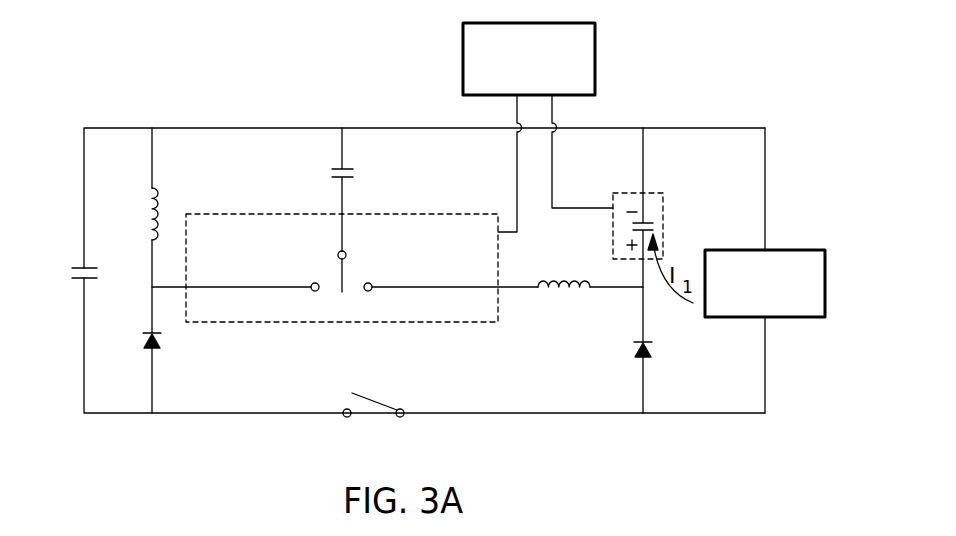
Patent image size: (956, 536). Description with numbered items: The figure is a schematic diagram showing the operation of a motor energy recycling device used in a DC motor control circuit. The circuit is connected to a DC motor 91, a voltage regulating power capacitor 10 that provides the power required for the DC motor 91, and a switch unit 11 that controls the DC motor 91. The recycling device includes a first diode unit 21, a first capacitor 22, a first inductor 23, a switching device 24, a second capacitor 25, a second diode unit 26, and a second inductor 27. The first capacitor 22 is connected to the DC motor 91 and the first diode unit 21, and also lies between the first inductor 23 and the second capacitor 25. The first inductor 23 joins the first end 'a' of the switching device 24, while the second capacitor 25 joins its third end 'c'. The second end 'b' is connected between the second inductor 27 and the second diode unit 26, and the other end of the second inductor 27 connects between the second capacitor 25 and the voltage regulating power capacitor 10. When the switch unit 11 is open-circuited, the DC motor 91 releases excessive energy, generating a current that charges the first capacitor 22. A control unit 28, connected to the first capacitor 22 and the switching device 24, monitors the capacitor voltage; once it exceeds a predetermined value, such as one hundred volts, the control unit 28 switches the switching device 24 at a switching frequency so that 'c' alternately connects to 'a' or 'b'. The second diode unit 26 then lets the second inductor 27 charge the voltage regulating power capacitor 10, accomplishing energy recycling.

The voltage regulating power capacitor 10 is at (72, 274).
The switch unit 11 is at (375, 398).
The first diode unit 21 is at (634, 345).
The first capacitor 22 is at (613, 228).
The first inductor 23 is at (545, 278).
The switching device 24 is at (442, 214).
The second capacitor 25 is at (331, 173).
The second diode unit 26 is at (143, 340).
The second inductor 27 is at (144, 215).
The control unit 28 is at (595, 62).
The DC motor 91 is at (788, 319).